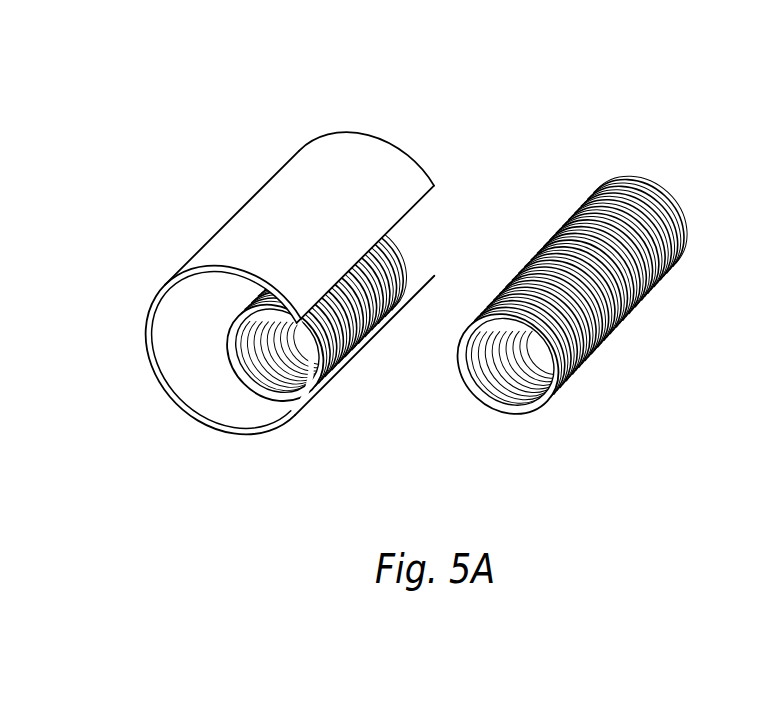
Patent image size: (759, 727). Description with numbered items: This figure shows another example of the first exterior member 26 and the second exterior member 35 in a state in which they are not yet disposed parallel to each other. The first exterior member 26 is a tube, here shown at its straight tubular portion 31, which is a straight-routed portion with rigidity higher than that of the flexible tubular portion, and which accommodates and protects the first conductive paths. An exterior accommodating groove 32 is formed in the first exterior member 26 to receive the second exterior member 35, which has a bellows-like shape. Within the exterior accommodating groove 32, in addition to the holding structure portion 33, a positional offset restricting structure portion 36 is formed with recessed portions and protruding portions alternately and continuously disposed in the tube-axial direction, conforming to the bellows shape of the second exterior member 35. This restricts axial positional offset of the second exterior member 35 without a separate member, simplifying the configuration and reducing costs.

The first exterior member 26 is at (378, 130).
The straight tubular portion 31 is at (263, 197).
The exterior accommodating groove 32 is at (258, 395).
The holding structure portion 33 is at (318, 403).
The second exterior member 35 is at (676, 177).
The positional offset restricting structure portion 36 is at (403, 258).